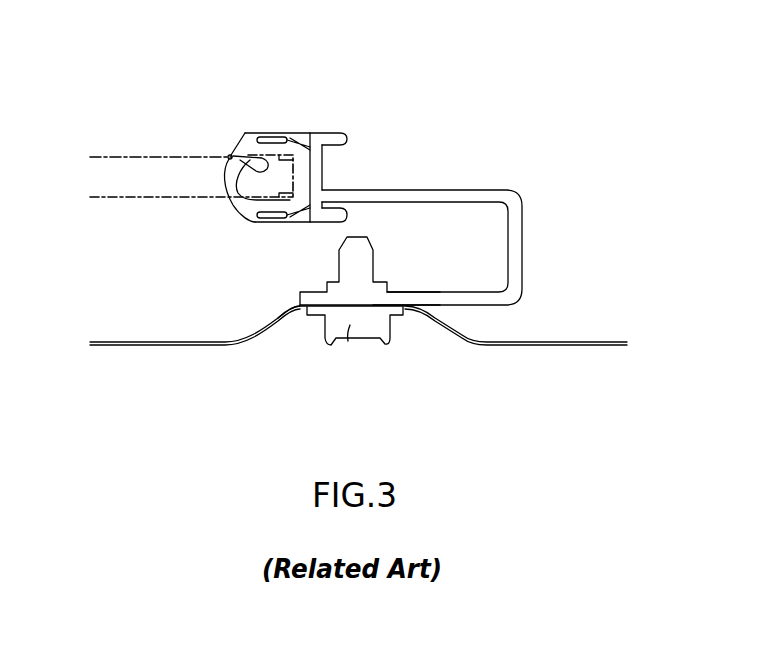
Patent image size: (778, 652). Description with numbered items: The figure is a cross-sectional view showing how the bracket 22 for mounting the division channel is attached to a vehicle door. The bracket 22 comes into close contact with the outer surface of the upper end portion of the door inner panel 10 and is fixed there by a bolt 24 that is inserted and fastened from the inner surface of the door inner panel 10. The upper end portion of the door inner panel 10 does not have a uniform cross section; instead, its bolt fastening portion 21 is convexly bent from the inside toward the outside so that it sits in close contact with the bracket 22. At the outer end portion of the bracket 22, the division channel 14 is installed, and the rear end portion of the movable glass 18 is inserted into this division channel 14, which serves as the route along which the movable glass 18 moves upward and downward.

The door inner panel 10 is at (563, 341).
The division channel 14 is at (307, 112).
The movable glass 18 is at (173, 155).
The bolt fastening portion 21 is at (293, 309).
The bracket for mounting the division channel 22 is at (413, 174).
The bolt 24 is at (355, 320).